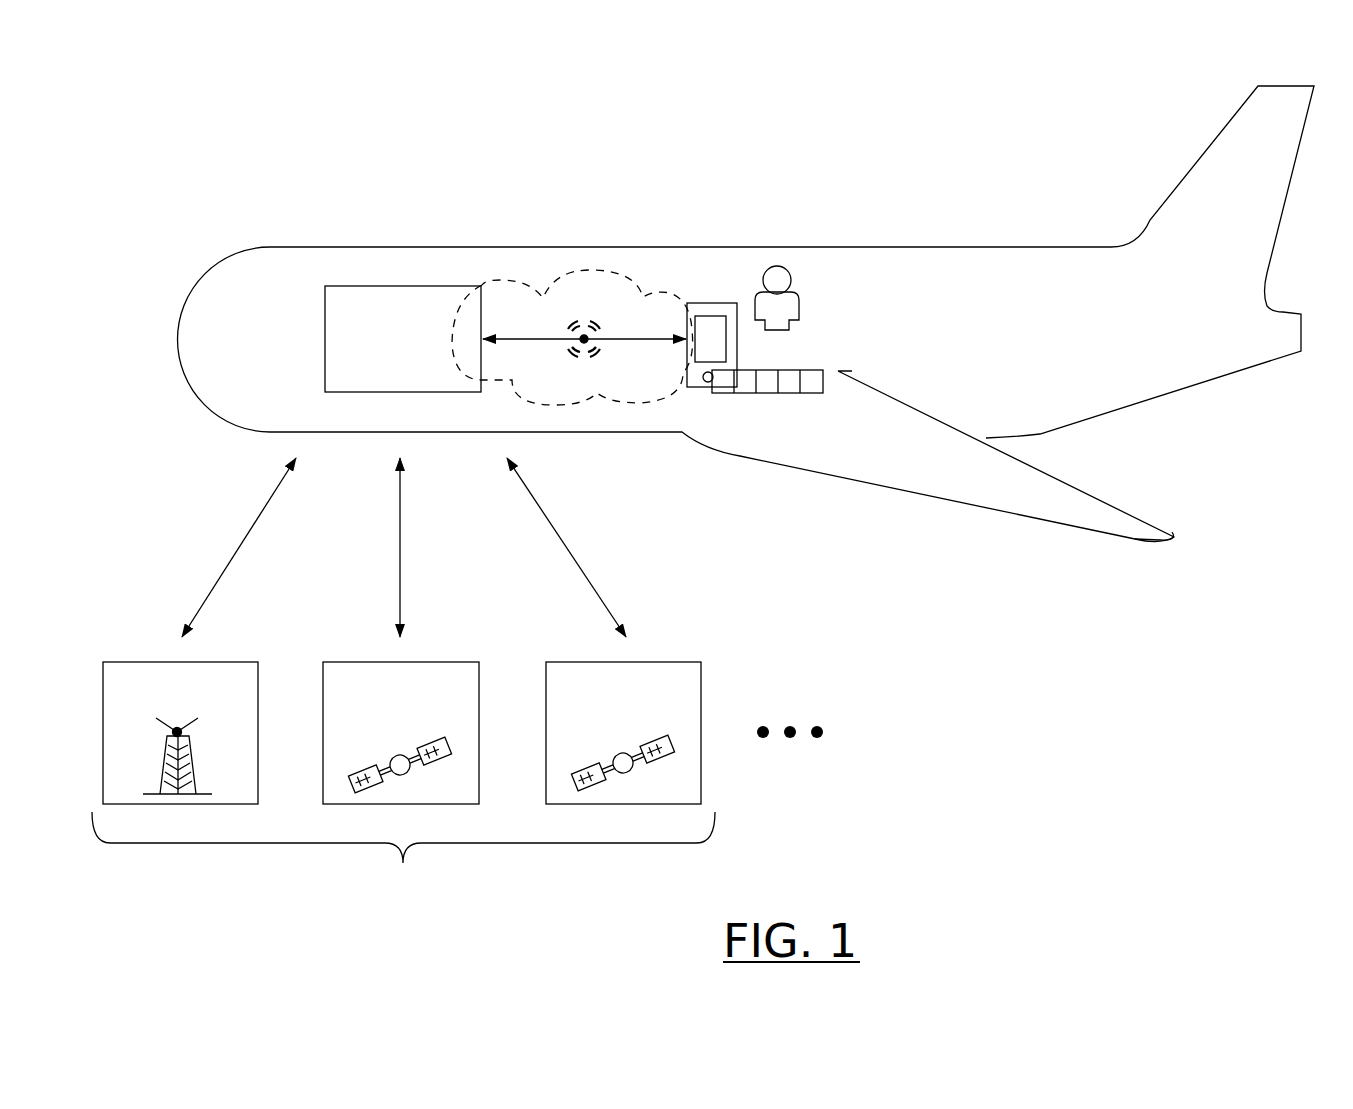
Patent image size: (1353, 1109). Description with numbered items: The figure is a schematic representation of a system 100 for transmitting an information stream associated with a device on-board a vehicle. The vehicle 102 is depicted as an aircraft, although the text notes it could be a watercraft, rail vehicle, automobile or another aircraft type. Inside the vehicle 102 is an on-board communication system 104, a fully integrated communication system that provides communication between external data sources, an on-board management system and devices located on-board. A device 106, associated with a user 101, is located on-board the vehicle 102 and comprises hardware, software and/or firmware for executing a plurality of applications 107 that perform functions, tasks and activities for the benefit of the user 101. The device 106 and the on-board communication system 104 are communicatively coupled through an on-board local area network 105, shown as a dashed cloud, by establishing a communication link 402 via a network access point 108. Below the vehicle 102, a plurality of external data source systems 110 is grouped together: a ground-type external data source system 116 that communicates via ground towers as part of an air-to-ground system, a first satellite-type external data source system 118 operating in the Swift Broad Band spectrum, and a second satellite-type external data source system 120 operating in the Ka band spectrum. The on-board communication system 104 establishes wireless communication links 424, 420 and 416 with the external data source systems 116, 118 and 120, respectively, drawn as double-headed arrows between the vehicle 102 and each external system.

The system 100 is at (172, 228).
The user 101 is at (789, 266).
The vehicle 102 is at (867, 500).
The on-board communication system 104 is at (382, 349).
The on-board local area network 105 is at (553, 268).
The device 106 is at (714, 300).
The applications 107 is at (747, 400).
The network access point 108 is at (590, 318).
The external data source systems 110 is at (403, 853).
The external data source system 116 is at (160, 705).
The external data source system 118 is at (380, 705).
The external data source system 120 is at (605, 705).
The communication link 402 is at (537, 357).
The wireless communication link 416 is at (562, 551).
The wireless communication link 420 is at (396, 532).
The wireless communication link 424 is at (242, 537).